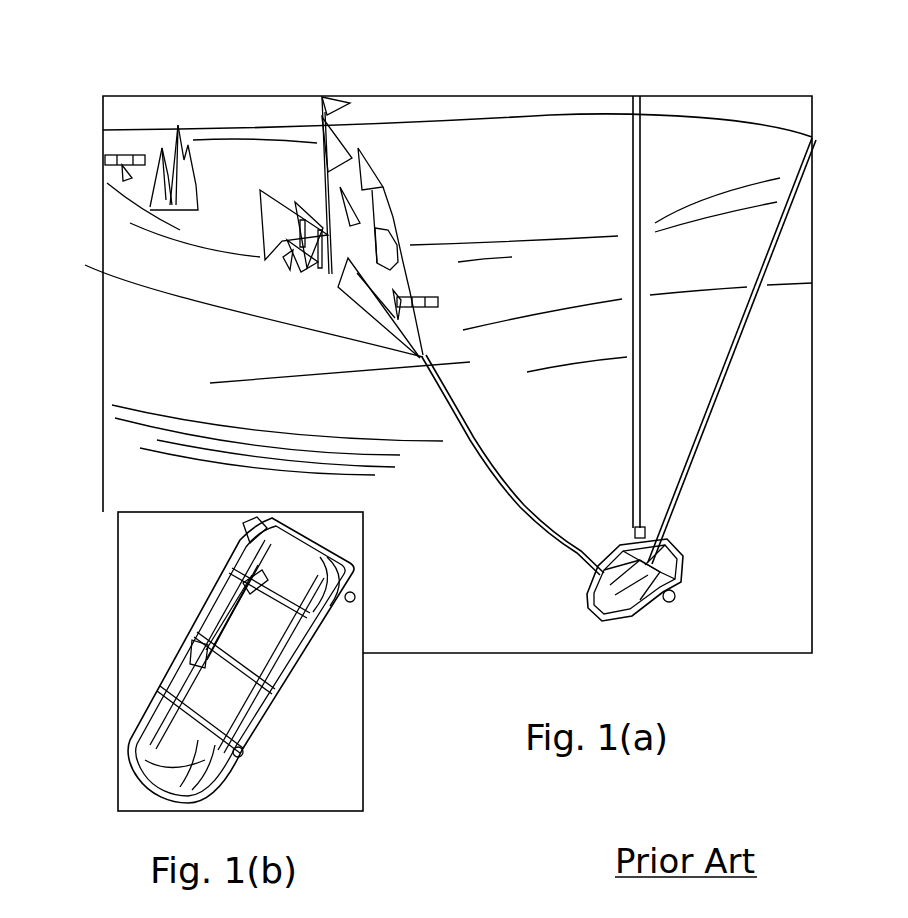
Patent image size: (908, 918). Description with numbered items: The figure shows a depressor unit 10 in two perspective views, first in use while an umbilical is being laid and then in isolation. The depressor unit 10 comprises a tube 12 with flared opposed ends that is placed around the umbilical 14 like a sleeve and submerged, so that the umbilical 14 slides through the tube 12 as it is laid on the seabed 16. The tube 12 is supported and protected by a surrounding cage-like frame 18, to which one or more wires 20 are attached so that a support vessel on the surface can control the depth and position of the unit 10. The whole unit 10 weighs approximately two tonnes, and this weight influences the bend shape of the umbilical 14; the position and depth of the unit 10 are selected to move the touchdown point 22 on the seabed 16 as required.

In FIG. 1A, the depressor unit 10 is at (680, 612).
In FIG. 1B, the depressor unit 10 is at (206, 664).
In FIG. 1B, the tube 12 is at (155, 755).
In FIG. 1A, the umbilical 14 is at (760, 330).
In FIG. 1A, the seabed 16 is at (748, 535).
In FIG. 1B, the cage-like frame 18 is at (233, 578).
In FIG. 1A, the wires 20 is at (640, 170).
In FIG. 1A, the touchdown point 22 is at (323, 412).